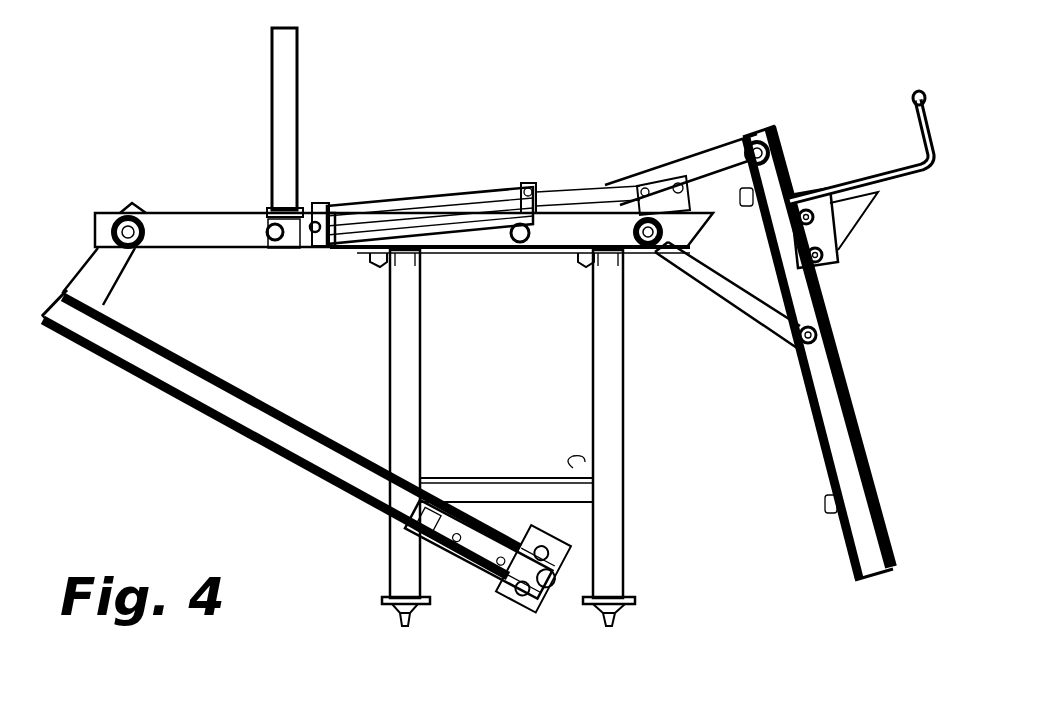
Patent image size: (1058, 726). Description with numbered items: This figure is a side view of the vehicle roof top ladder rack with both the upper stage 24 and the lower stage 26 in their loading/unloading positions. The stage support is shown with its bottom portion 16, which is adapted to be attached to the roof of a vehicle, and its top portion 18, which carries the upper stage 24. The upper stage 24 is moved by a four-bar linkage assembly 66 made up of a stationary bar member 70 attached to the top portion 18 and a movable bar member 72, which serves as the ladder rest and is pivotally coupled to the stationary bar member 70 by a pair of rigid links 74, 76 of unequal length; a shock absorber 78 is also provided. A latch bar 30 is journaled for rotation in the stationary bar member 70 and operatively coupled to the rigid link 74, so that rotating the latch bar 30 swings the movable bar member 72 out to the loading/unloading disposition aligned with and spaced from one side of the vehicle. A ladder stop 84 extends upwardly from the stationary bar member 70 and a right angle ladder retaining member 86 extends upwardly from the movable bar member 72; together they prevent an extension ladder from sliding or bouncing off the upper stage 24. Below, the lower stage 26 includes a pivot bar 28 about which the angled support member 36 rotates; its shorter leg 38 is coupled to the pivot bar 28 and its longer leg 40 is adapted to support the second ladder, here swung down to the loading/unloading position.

The bottom portion 16 is at (428, 614).
The top portion 18 is at (380, 264).
The upper stage 24 is at (845, 332).
The lower stage 26 is at (178, 418).
The pivot bar 28 is at (124, 218).
The latch bar 30 is at (658, 252).
The angled support member 36 is at (227, 364).
The shorter leg 38 is at (112, 280).
The longer leg 40 is at (258, 424).
The 4-bar linkage assembly 66 is at (736, 134).
The stationary bar member 70 is at (567, 227).
The movable bar member 72 is at (830, 420).
The rigid link 74 is at (702, 155).
The rigid link 76 is at (737, 307).
The shock absorber 78 is at (416, 190).
The ladder stop 84 is at (270, 88).
The right angle ladder retaining member 86 is at (918, 125).